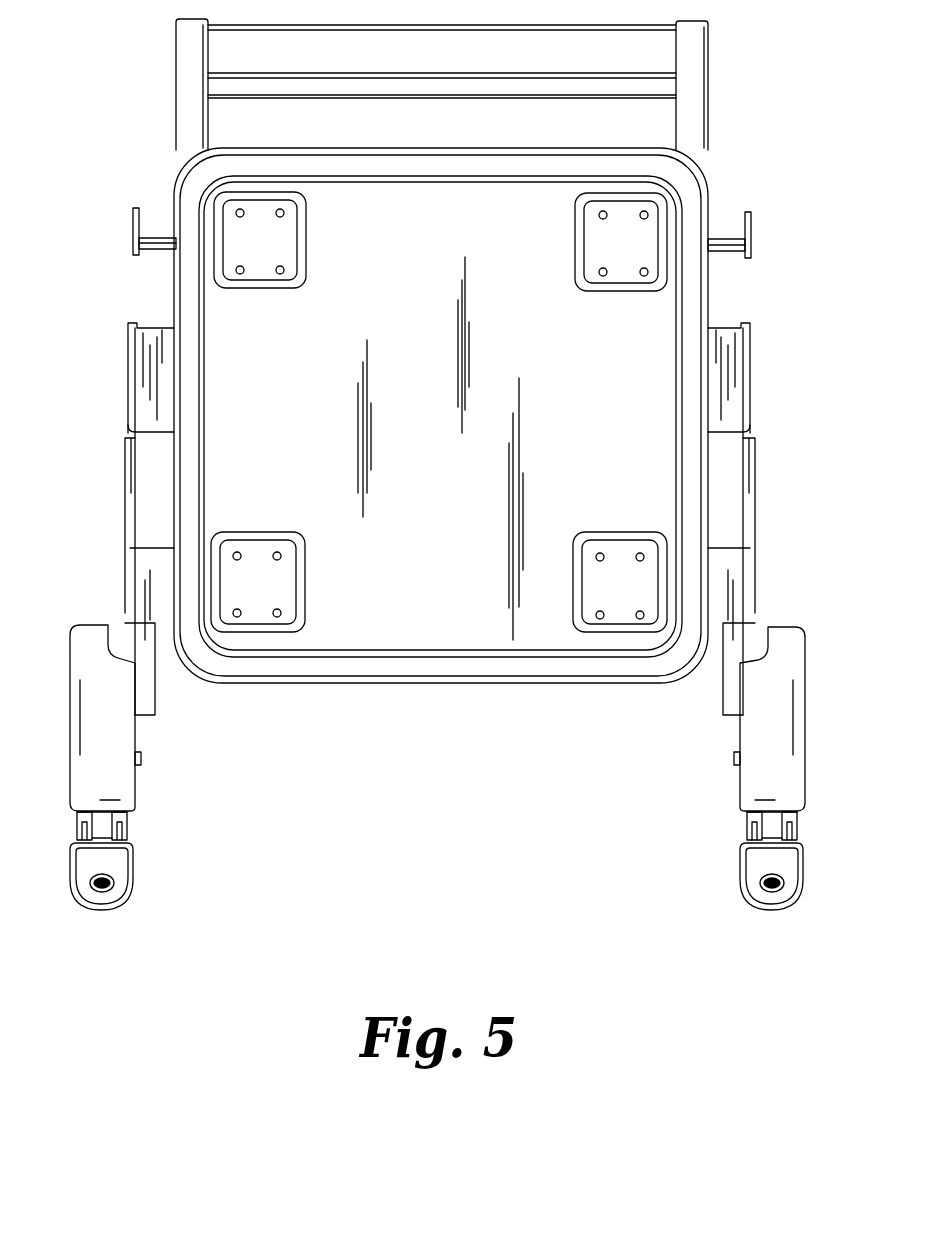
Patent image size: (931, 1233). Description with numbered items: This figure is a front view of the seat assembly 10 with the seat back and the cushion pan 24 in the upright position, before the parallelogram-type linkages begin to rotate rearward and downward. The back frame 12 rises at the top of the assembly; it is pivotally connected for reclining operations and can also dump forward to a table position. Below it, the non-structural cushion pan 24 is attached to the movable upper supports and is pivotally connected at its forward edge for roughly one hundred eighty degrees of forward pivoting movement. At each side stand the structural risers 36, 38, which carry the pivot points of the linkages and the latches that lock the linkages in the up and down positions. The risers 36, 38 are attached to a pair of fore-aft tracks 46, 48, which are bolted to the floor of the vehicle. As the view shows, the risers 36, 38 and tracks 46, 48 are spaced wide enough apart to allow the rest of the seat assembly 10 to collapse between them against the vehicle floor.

The seat assembly 10 is at (575, 880).
The back frame 12 is at (710, 122).
The cushion pan 24 is at (452, 667).
The structural riser 36 is at (805, 733).
The structural riser 38 is at (68, 733).
The fore-aft track 46 is at (797, 827).
The fore-aft track 48 is at (77, 830).